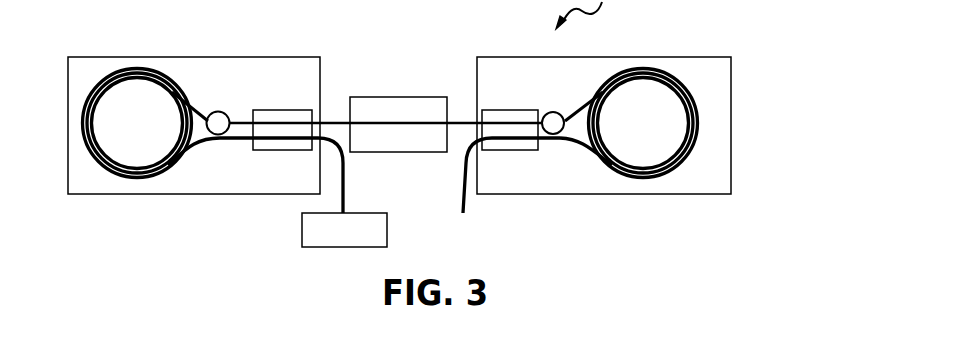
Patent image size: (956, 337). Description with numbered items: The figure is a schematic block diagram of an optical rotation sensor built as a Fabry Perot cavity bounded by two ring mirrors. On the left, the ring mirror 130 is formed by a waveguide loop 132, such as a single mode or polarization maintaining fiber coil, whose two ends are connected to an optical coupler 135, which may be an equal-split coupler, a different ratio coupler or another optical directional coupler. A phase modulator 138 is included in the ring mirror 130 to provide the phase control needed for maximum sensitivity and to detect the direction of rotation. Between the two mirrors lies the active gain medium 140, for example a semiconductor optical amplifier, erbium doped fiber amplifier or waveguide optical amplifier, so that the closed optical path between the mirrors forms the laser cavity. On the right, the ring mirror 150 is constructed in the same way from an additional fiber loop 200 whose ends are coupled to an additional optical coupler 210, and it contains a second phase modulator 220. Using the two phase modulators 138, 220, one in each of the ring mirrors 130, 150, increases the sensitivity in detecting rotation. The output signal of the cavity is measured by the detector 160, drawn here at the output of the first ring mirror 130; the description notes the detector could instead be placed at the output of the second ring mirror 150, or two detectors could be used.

The ring mirror 130 is at (321, 75).
The waveguide loop 132 is at (166, 78).
The optical coupler 135 is at (272, 110).
The phase modulator 138 is at (220, 109).
The active gain medium 140 is at (393, 96).
The ring mirror 150 is at (731, 75).
The detector 160 is at (388, 237).
The additional fiber loop 200 is at (609, 82).
The additional optical coupler 210 is at (500, 110).
The phase modulator 220 is at (553, 111).